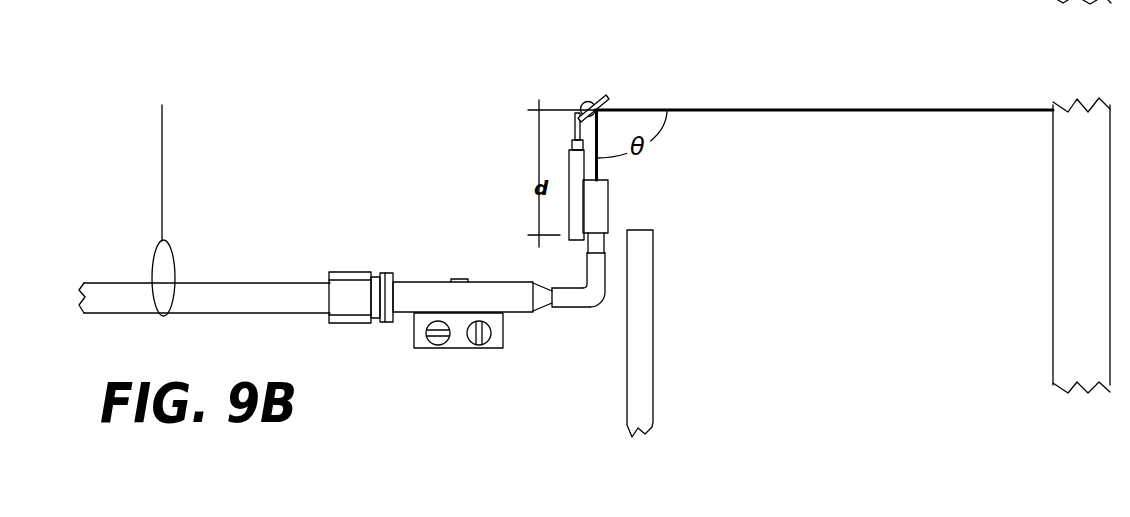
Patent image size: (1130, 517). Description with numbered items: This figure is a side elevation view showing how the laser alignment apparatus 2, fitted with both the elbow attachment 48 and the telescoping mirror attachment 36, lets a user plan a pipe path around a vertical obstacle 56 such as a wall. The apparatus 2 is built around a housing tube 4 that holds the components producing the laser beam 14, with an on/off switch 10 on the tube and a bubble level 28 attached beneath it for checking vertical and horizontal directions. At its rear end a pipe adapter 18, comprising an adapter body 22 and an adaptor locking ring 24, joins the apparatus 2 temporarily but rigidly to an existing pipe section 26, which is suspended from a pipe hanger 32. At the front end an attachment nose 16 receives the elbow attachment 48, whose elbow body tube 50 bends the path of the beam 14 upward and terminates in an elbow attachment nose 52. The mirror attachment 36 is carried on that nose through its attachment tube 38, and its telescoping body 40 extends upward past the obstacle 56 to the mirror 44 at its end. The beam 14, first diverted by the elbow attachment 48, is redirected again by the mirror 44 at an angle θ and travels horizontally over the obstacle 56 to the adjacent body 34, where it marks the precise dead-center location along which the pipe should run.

The laser alignment apparatus 2 is at (399, 161).
The housing tube 4 is at (457, 271).
The on/off switch 10 is at (462, 279).
The laser beam 14 is at (765, 110).
The attachment nose 16 is at (549, 303).
The pipe adapter 18 is at (338, 293).
The adapter body 22 is at (323, 313).
The adaptor locking ring 24 is at (388, 322).
The existing pipe section 26 is at (187, 283).
The bubble level 28 is at (413, 343).
The pipe hanger 32 is at (161, 152).
The adjacent body 34 is at (1053, 243).
The telescoping mirror attachment 36 is at (621, 99).
The attachment tube 38 is at (608, 180).
The telescoping body 40 is at (568, 163).
The mirror 44 is at (602, 98).
The elbow attachment 48 is at (572, 273).
The elbow body tube 50 is at (583, 308).
The elbow attachment nose 52 is at (603, 245).
The vertical obstacle 56 is at (648, 229).